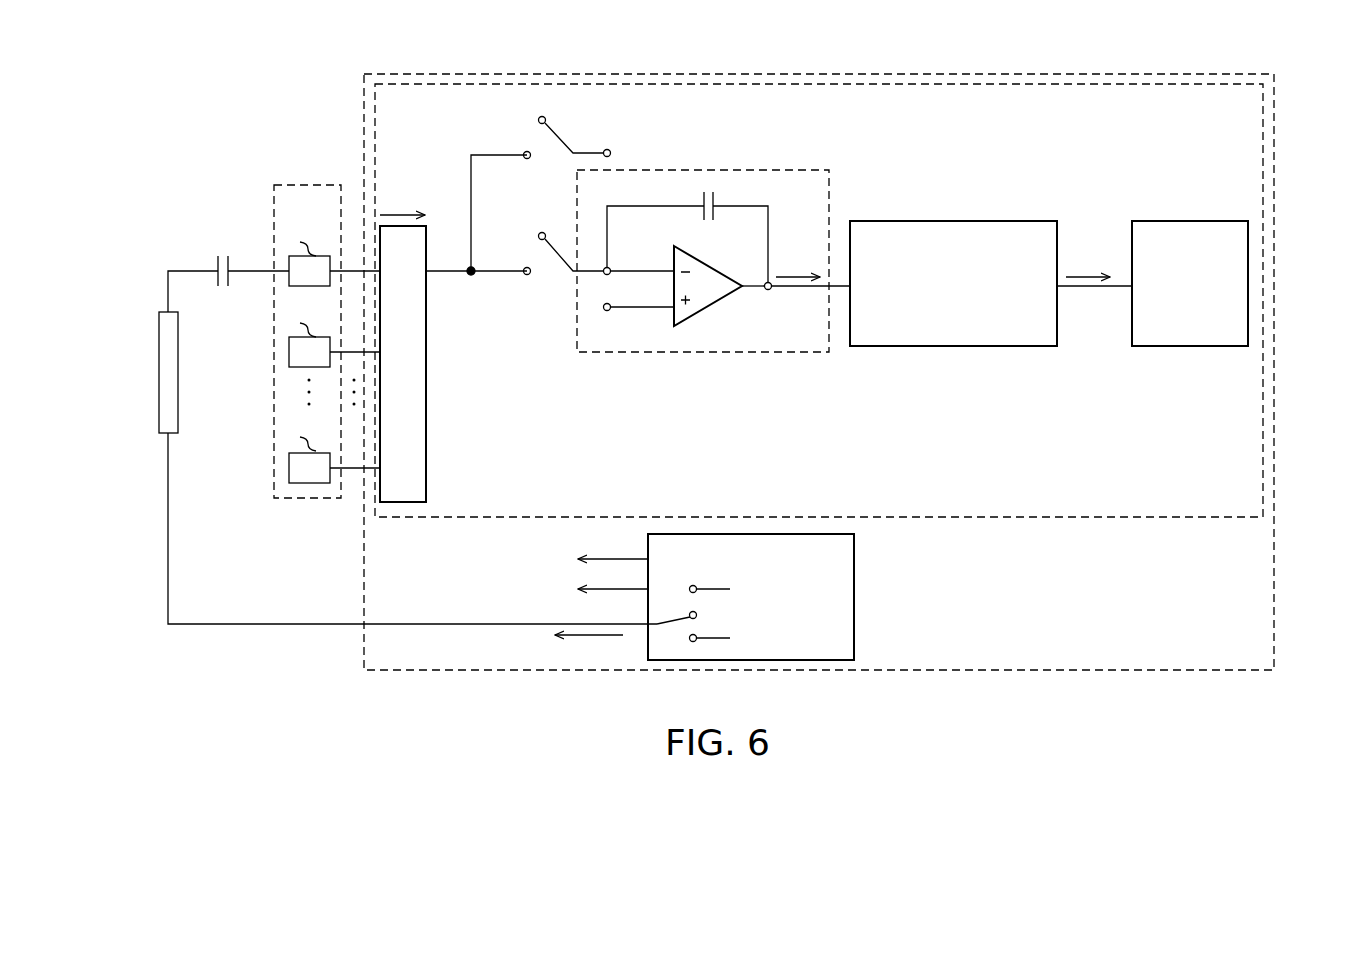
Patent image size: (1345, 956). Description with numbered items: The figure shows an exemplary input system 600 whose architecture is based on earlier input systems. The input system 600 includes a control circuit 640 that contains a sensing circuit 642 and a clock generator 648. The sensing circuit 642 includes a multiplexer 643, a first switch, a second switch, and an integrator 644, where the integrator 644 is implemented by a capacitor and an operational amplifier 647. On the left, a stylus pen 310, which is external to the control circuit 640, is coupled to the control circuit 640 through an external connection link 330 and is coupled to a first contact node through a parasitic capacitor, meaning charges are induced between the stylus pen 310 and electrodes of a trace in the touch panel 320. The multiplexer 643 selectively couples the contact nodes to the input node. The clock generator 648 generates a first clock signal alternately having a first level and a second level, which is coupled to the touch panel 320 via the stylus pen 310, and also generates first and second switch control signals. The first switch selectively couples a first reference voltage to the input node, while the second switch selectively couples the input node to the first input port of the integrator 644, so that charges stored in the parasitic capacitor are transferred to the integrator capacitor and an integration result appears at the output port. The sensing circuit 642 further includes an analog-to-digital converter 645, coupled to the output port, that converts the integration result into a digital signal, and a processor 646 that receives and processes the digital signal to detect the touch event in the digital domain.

The input system 600 is at (206, 130).
The stylus pen 310 is at (159, 361).
The touch panel 320 is at (307, 185).
The connection link 330 is at (168, 535).
The control circuit 640 is at (1275, 151).
The sensing circuit 642 is at (1264, 118).
The multiplexer 643 is at (426, 448).
The integrator 644 is at (829, 180).
The analog-to-digital converter 645 is at (957, 221).
The processor 646 is at (1191, 221).
The operational amplifier 647 is at (700, 259).
The clock generator 648 is at (855, 594).